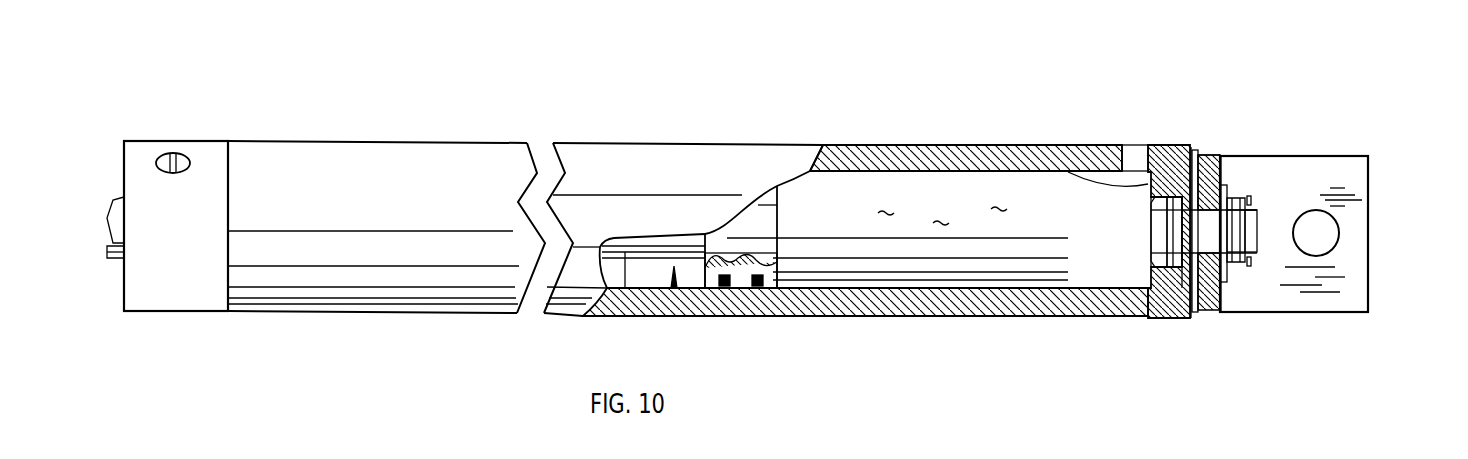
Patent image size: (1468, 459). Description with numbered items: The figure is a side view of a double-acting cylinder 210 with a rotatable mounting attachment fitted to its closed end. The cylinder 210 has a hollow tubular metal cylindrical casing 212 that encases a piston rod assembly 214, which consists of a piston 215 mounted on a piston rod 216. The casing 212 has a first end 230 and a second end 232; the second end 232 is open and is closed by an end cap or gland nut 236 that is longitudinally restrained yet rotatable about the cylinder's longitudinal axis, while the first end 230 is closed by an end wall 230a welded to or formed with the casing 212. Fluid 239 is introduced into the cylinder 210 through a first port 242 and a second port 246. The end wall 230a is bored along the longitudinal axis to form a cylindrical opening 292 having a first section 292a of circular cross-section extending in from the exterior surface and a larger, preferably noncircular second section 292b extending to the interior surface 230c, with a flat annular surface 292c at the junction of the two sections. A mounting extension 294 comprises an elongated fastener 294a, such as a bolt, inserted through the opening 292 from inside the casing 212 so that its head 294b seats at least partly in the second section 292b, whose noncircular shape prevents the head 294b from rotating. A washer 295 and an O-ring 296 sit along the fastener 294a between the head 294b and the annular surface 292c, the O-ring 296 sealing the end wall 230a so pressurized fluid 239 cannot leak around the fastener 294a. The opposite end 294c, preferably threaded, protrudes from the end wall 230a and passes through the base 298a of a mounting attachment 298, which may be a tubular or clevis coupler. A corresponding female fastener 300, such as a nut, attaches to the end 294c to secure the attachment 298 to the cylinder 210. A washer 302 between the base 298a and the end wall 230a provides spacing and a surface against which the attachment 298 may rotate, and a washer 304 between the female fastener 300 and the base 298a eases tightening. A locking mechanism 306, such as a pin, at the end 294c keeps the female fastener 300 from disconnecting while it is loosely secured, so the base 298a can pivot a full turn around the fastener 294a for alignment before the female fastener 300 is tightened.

The double-acting cylinder 210 is at (645, 68).
The cylindrical casing 212 is at (880, 153).
The piston rod assembly 214 is at (663, 309).
The piston 215 is at (775, 249).
The piston rod 216 is at (618, 296).
The first end 230 is at (1157, 152).
The end wall 230a is at (1186, 150).
The interior surface 230c is at (1083, 146).
The second end 232 is at (228, 141).
The gland nut 236 is at (168, 302).
The fluid 239 is at (957, 203).
The first port 242 is at (1137, 151).
The second port 246 is at (173, 153).
The cylindrical opening 292 is at (1206, 311).
The first section 292a is at (1194, 152).
The second section 292b is at (1162, 272).
The flat annular surface 292c is at (1180, 284).
The mounting extension 294 is at (1282, 230).
The fastener 294a is at (1257, 247).
The head 294b is at (1157, 262).
The end 294c is at (1256, 212).
The washer 295 is at (1160, 204).
The O-ring 296 is at (1175, 222).
The mounting attachment 298 is at (1322, 302).
The base 298a is at (1210, 312).
The female fastener 300 is at (1232, 200).
The washer 302 is at (1200, 155).
The washer 304 is at (1223, 278).
The locking mechanism 306 is at (1253, 208).